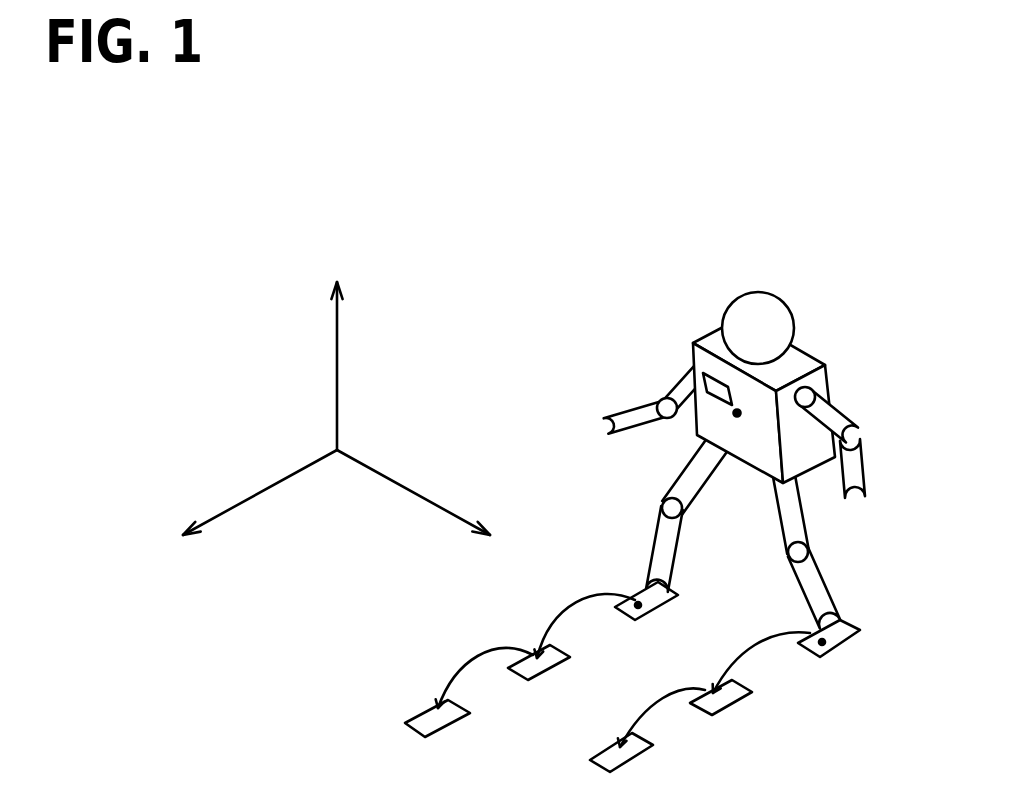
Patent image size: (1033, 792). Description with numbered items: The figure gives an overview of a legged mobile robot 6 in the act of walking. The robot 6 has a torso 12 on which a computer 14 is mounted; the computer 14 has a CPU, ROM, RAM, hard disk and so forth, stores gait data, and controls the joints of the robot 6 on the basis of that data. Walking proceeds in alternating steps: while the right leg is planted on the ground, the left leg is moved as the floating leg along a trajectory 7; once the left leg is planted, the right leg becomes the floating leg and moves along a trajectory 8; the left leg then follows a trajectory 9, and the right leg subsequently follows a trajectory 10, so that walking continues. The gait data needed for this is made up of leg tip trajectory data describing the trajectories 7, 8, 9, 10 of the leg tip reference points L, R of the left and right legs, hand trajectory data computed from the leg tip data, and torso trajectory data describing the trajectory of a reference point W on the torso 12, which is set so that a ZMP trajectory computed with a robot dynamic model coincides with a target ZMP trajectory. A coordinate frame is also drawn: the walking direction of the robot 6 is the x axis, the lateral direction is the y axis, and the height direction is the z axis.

The robot 6 is at (771, 473).
The trajectory 7 is at (750, 673).
The trajectory 8 is at (571, 637).
The trajectory 9 is at (647, 730).
The trajectory 10 is at (469, 692).
The torso 12 is at (813, 352).
The computer 14 is at (712, 384).
The leg tip reference point R is at (638, 605).
The leg tip reference point L is at (830, 647).
The reference point W is at (737, 413).
The x axis x is at (247, 505).
The y axis y is at (425, 504).
The z axis z is at (338, 348).